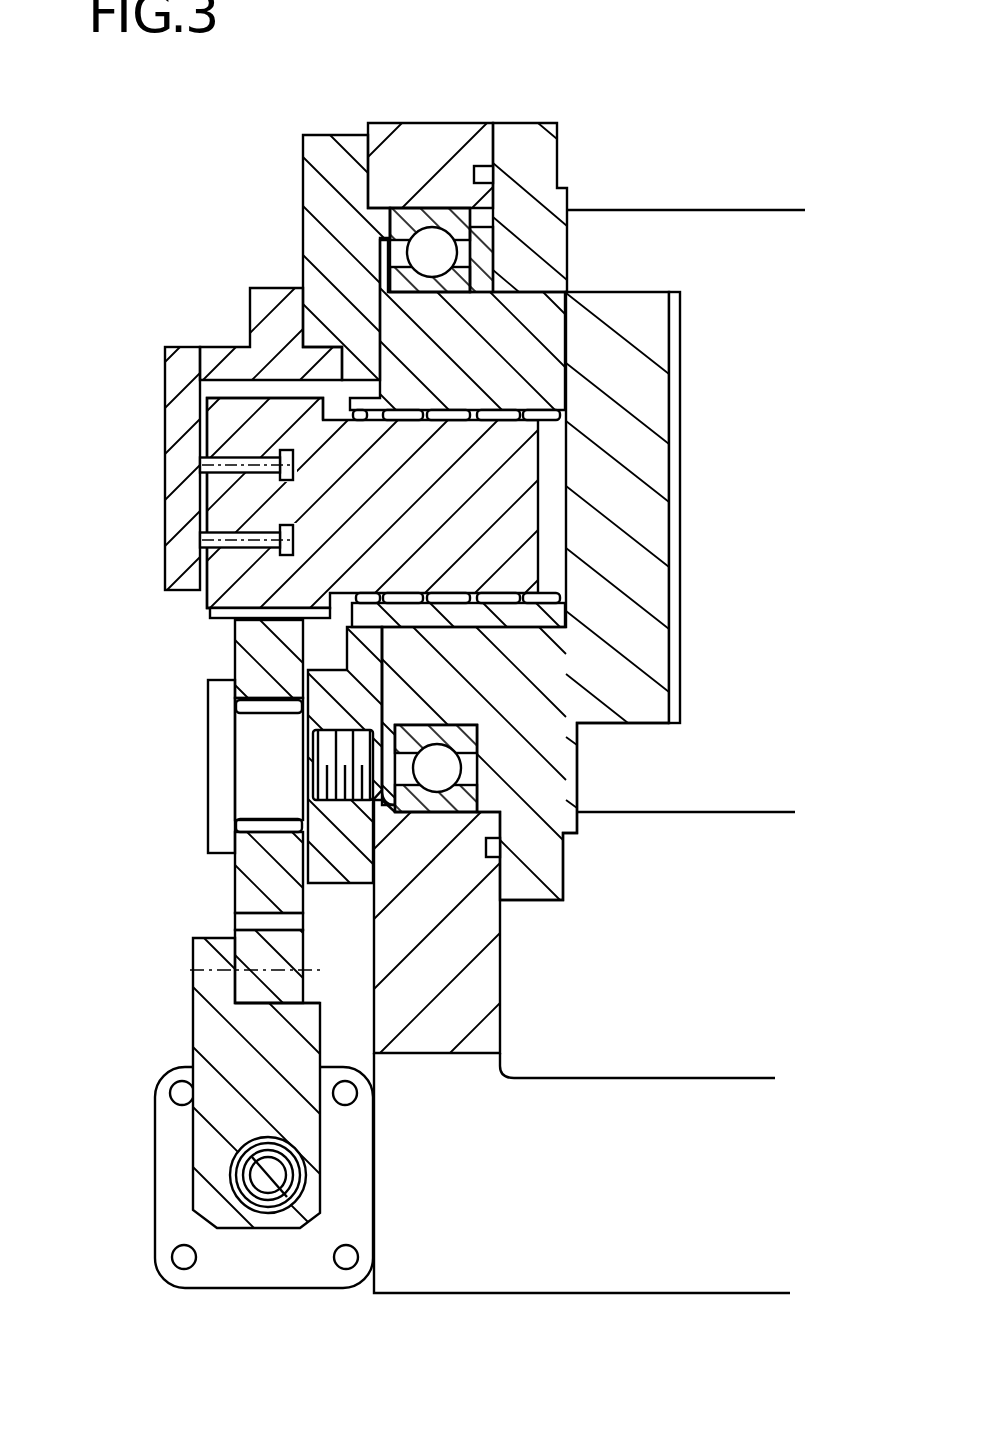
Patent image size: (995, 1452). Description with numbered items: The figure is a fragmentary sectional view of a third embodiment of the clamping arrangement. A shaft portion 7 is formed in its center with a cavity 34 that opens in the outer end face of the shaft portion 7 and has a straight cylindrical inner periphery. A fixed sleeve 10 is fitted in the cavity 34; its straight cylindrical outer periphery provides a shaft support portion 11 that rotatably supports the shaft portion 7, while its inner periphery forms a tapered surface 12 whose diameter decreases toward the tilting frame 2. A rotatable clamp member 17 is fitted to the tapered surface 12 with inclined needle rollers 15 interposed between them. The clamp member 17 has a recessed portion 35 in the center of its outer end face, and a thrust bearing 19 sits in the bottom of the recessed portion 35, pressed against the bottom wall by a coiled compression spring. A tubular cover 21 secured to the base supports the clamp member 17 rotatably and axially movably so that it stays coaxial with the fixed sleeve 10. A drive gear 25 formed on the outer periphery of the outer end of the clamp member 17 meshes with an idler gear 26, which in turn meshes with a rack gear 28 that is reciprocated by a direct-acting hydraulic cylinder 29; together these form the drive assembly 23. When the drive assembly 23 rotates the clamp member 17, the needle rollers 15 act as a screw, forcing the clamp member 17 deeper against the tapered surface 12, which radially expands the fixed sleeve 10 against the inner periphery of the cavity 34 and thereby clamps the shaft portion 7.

The tilting frame 2 is at (672, 250).
The shaft portion 7 is at (599, 705).
The fixed sleeve 10 is at (644, 433).
The shaft support portion 11 is at (437, 393).
The tapered surface 12 is at (565, 413).
The needle rollers 15 is at (465, 627).
The clamp member 17 is at (517, 538).
The thrust bearing 19 is at (289, 476).
The tubular cover 21 is at (197, 362).
The drive assembly 23 is at (140, 1068).
The drive gear 25 is at (211, 622).
The idler gear 26 is at (250, 890).
The rack gear 28 is at (250, 987).
The direct-acting hydraulic cylinder 29 is at (173, 1220).
The cavity 34 is at (540, 403).
The recessed portion 35 is at (224, 466).